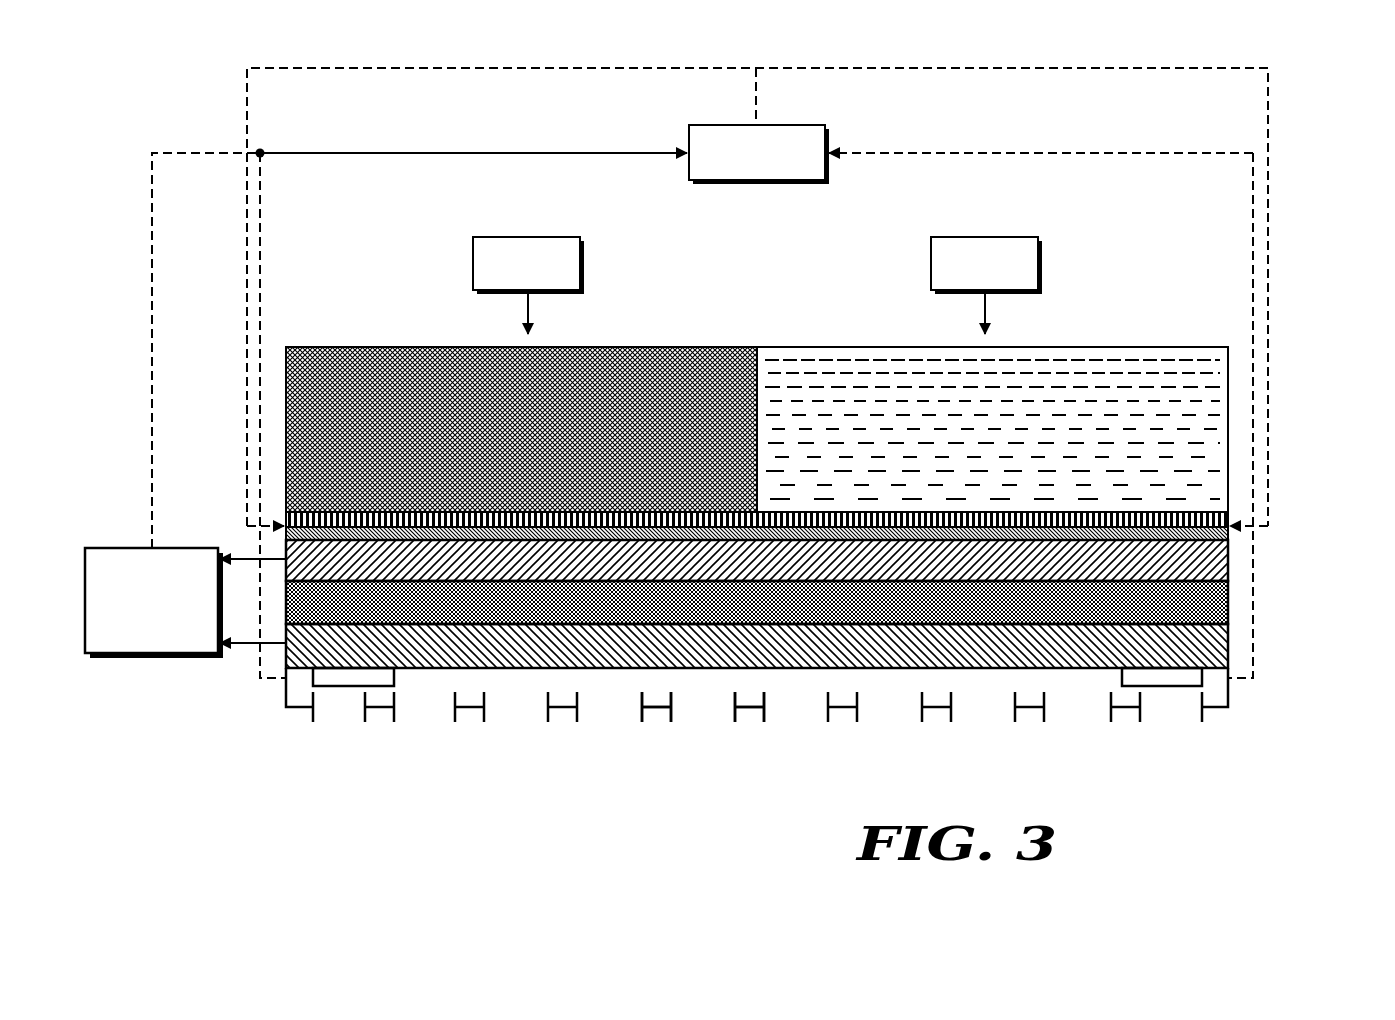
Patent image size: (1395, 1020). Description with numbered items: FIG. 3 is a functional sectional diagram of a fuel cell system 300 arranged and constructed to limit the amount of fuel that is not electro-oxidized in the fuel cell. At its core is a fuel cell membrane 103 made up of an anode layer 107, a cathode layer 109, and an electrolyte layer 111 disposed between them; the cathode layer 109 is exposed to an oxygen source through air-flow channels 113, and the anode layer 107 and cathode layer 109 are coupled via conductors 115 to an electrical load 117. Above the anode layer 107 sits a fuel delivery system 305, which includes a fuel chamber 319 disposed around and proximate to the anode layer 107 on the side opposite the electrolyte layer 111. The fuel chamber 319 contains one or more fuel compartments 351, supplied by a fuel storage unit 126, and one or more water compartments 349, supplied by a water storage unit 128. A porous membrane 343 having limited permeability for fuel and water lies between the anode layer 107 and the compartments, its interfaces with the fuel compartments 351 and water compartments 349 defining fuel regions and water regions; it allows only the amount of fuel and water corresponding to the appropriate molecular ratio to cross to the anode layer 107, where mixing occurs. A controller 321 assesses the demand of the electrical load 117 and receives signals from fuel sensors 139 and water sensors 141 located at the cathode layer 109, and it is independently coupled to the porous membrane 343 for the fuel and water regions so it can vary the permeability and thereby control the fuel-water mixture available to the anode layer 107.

The fuel delivery system 305 is at (1282, 160).
The controller 321 is at (825, 125).
The fuel storage unit 126 is at (474, 237).
The water storage unit 128 is at (932, 237).
The fuel cell device 300 is at (982, 790).
The fuel chamber 319 is at (287, 345).
The fuel compartments 351 is at (655, 380).
The water compartments 349 is at (1078, 365).
The porous membrane 343 is at (1198, 509).
The anode layer 107 is at (1228, 556).
The electrolyte layer 111 is at (1228, 600).
The cathode layer 109 is at (1228, 650).
The electrical load 117 is at (85, 548).
The conductors 115 is at (248, 553).
The fuel cell membrane 103 is at (468, 683).
The air-flow channels 113 is at (701, 719).
The water sensors 141 is at (339, 688).
The fuel sensors 139 is at (1164, 694).